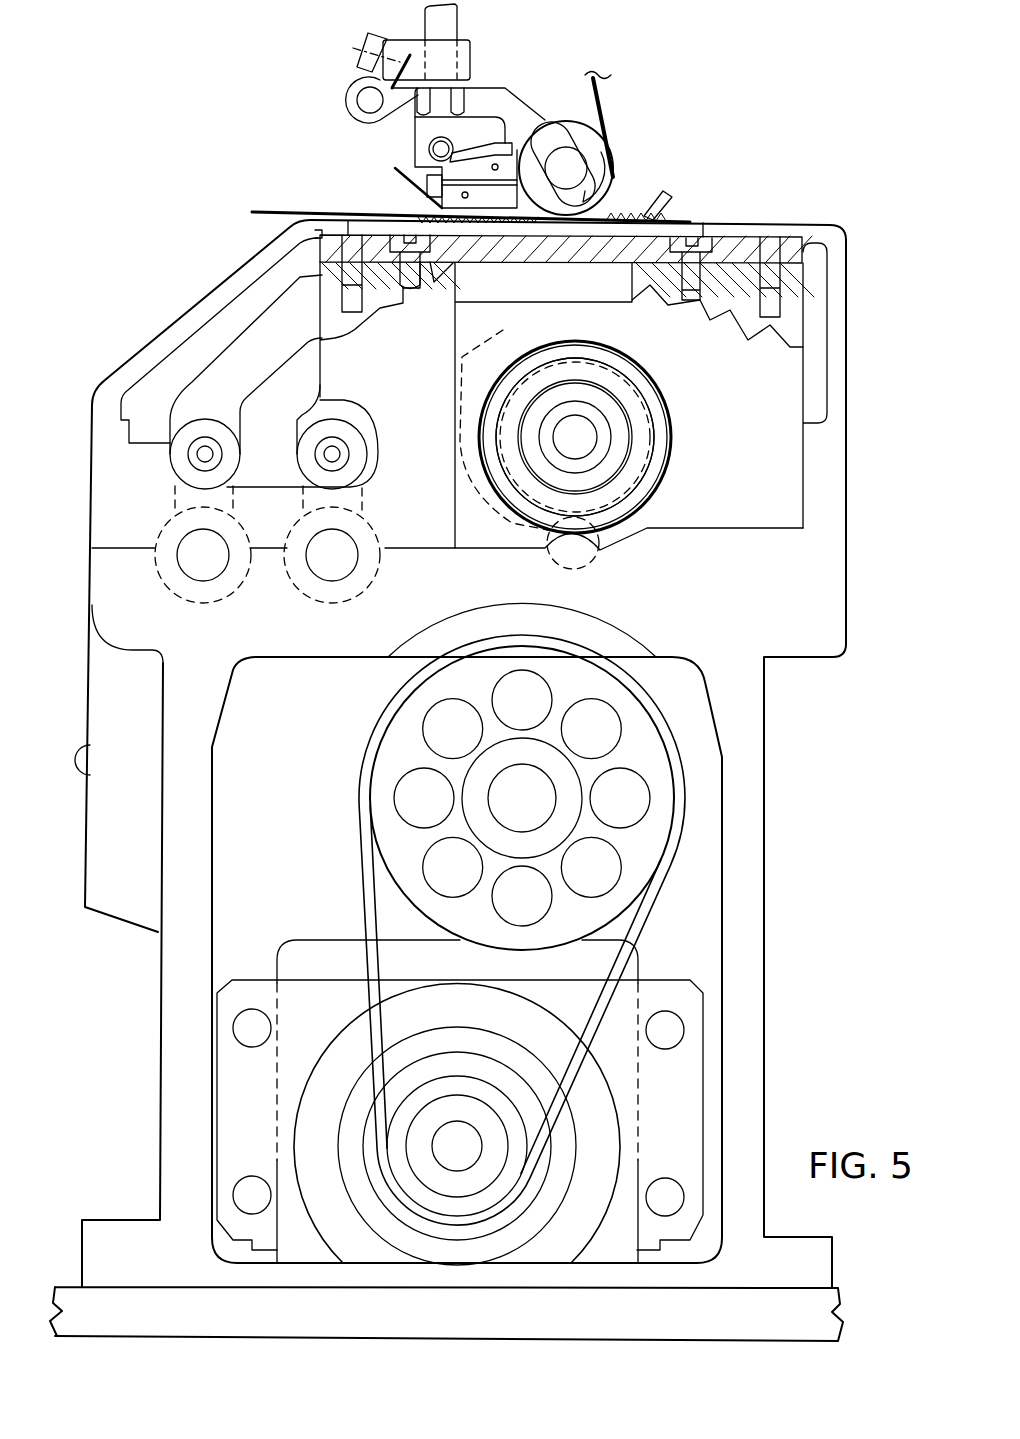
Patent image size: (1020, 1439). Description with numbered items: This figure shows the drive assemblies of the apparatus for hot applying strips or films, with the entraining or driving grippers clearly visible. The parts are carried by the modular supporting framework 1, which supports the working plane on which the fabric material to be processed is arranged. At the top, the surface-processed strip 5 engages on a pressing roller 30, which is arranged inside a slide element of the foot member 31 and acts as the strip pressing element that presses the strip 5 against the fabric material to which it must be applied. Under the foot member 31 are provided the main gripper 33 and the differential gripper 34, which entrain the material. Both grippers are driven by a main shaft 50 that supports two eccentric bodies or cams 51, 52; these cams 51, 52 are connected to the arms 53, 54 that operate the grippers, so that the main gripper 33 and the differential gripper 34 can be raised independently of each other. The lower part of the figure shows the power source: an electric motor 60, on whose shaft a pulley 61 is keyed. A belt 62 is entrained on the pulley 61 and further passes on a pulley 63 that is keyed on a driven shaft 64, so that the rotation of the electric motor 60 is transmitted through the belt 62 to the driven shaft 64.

The modular supporting framework 1 is at (820, 617).
The cutting blade 5 is at (607, 100).
The pressing roller 30 is at (566, 135).
The foot member 31 is at (628, 204).
The main gripper 33 is at (405, 82).
The differential gripper 34 is at (665, 213).
The main shaft 50 is at (577, 432).
The eccentric body 51 is at (668, 477).
The eccentric body 52 is at (575, 437).
The arm 53 is at (330, 402).
The arm 54 is at (276, 340).
The electric motor 60 is at (598, 1100).
The pulley 61 is at (410, 1150).
The belt 62 is at (373, 866).
The pulley 63 is at (650, 768).
The driven shaft 64 is at (533, 812).